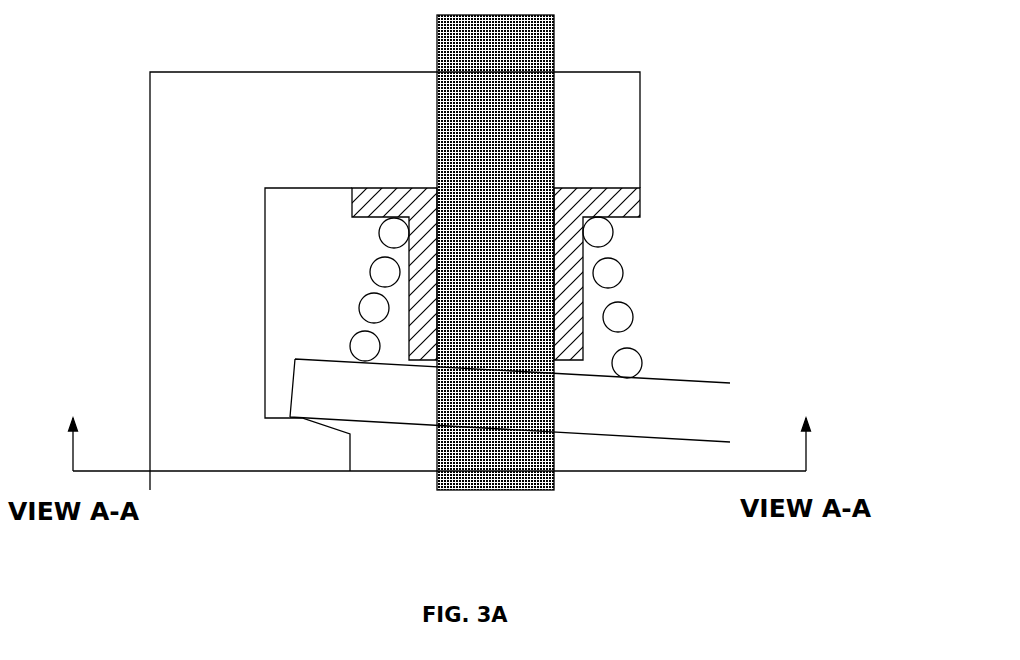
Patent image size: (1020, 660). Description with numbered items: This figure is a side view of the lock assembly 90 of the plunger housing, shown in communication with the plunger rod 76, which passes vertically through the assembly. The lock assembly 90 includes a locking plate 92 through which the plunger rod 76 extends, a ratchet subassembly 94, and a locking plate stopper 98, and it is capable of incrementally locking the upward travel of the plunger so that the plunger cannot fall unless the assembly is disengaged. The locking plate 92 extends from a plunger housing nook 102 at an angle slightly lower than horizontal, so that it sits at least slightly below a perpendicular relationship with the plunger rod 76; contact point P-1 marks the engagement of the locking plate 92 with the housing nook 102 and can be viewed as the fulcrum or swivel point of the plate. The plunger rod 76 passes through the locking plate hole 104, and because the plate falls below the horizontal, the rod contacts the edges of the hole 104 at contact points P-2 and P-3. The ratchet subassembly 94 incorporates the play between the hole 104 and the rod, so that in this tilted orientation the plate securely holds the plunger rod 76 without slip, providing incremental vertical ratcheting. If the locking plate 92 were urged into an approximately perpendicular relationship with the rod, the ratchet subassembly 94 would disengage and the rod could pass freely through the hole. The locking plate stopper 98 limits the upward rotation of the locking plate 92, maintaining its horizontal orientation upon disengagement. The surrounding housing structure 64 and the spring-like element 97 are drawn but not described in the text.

The plunger rod 76 is at (534, 38).
The housing 64 is at (628, 82).
The locking plate stopper 98 is at (632, 198).
The spring 97 is at (622, 312).
The lock assembly 90 is at (782, 343).
The locking plate 92 is at (718, 403).
The plunger housing nook 102 is at (293, 418).
The locking plate hole 104 is at (500, 412).
The ratchet subassembly 94 is at (417, 443).
The contact point P1 P-1 is at (297, 421).
The contact point P2 P-2 is at (433, 367).
The contact point P3 P-3 is at (558, 440).